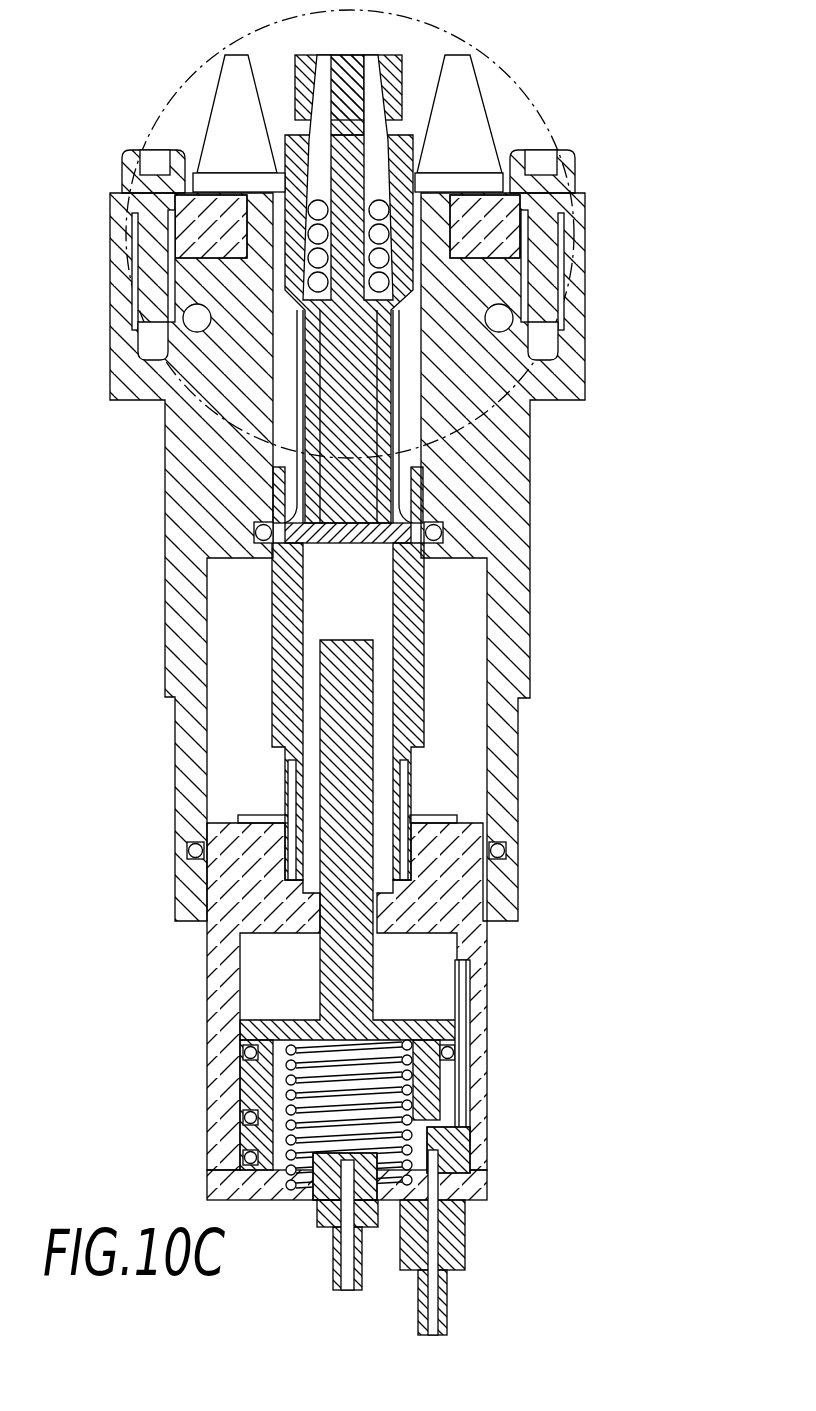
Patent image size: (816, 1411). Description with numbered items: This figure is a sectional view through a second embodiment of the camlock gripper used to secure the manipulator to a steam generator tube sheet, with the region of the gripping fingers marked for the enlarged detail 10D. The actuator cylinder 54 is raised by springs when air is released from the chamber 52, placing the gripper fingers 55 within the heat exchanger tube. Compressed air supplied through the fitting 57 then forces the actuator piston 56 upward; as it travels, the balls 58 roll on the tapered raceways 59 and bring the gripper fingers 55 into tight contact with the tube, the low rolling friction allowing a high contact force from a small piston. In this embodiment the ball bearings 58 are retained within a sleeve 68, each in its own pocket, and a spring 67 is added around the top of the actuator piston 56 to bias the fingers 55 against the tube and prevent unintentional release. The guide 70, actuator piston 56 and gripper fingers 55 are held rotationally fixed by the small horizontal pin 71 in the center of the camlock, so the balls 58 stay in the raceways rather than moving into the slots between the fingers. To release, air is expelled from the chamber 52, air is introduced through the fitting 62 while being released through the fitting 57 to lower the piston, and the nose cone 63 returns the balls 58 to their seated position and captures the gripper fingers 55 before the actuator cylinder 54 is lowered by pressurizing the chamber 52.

The enlargement of the gripping finger area 10D is at (540, 56).
The chamber 52 is at (455, 612).
The actuator cylinder 54 is at (206, 957).
The gripper fingers 55 is at (410, 185).
The actuator piston 56 is at (373, 990).
The fitting 57 is at (327, 1250).
The balls 58 is at (284, 160).
The tapered raceways 59 is at (400, 185).
The fitting 62 is at (446, 1300).
The nose cone 63 is at (297, 70).
The spring 67 is at (250, 1128).
The sleeve 68 is at (398, 200).
The guide 70 is at (300, 400).
The horizontal pin 71 is at (345, 543).